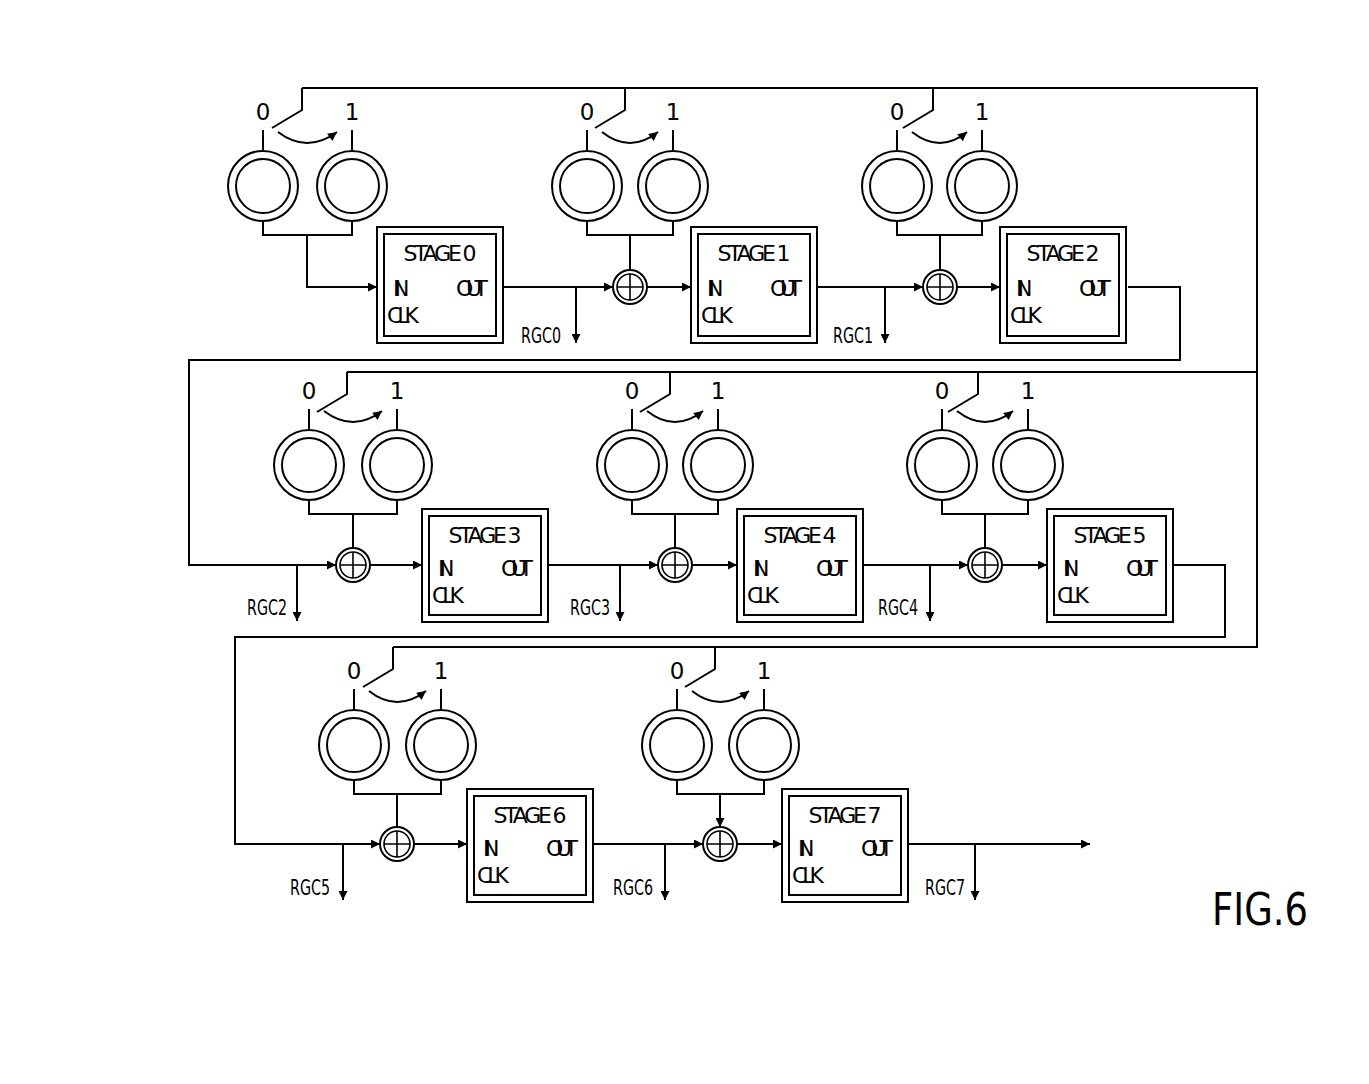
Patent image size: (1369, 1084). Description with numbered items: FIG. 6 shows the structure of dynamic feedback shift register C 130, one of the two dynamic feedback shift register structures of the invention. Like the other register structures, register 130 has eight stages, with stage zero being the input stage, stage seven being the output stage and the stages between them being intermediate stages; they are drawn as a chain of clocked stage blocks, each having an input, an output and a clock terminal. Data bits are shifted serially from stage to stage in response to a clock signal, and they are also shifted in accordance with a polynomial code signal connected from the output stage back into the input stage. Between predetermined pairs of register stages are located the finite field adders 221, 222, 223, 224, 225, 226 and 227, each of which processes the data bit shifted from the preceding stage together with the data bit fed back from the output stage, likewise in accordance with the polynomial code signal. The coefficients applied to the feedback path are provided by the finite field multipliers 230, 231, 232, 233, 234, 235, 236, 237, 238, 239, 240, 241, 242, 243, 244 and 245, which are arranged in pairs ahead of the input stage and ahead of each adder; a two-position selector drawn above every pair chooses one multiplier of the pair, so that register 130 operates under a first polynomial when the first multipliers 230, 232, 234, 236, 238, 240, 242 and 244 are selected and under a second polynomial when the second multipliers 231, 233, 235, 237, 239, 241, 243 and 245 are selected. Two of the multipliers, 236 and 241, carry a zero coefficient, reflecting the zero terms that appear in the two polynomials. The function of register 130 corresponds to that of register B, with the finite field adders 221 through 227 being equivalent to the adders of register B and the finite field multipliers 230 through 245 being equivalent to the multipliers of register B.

The dynamic feedback shift register C 130 is at (168, 136).
The finite field adder 221 is at (630, 305).
The finite field adder 222 is at (940, 305).
The finite field adder 223 is at (353, 583).
The finite field adder 224 is at (675, 583).
The finite field adder 225 is at (985, 583).
The finite field adder 226 is at (397, 862).
The finite field adder 227 is at (720, 862).
The finite field multiplier 230 is at (236, 172).
The finite field multiplier 231 is at (378, 160).
The finite field multiplier 232 is at (557, 177).
The finite field multiplier 233 is at (699, 160).
The finite field multiplier 234 is at (867, 174).
The finite field multiplier 235 is at (1008, 162).
The finite field multiplier 236 is at (279, 454).
The finite field multiplier 237 is at (422, 440).
The finite field multiplier 238 is at (601, 454).
The finite field multiplier 239 is at (744, 440).
The finite field multiplier 240 is at (911, 454).
The finite field multiplier 241 is at (1053, 440).
The finite field multiplier 242 is at (323, 734).
The finite field multiplier 243 is at (466, 718).
The finite field multiplier 244 is at (646, 734).
The finite field multiplier 245 is at (789, 718).